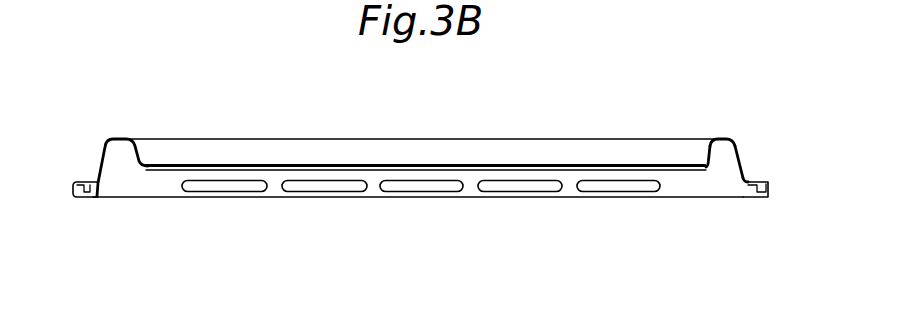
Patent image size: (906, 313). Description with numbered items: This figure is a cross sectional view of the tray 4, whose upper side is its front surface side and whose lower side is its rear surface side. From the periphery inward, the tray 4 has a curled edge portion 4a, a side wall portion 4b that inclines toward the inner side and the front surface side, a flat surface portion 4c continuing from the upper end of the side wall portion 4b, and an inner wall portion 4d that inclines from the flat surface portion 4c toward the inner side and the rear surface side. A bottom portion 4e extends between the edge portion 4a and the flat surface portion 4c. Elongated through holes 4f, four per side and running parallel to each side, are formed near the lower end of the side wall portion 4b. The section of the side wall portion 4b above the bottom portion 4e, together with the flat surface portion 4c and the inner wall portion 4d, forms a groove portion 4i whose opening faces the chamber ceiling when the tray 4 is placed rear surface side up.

The tray 4 is at (746, 133).
The curled edge portion 4a is at (768, 193).
The side wall portion 4b is at (741, 171).
The flat surface portion 4c is at (721, 138).
The inner wall portion 4d is at (718, 163).
The bottom portion 4e is at (570, 164).
The through holes 4f is at (578, 192).
The groove portion 4i is at (729, 158).